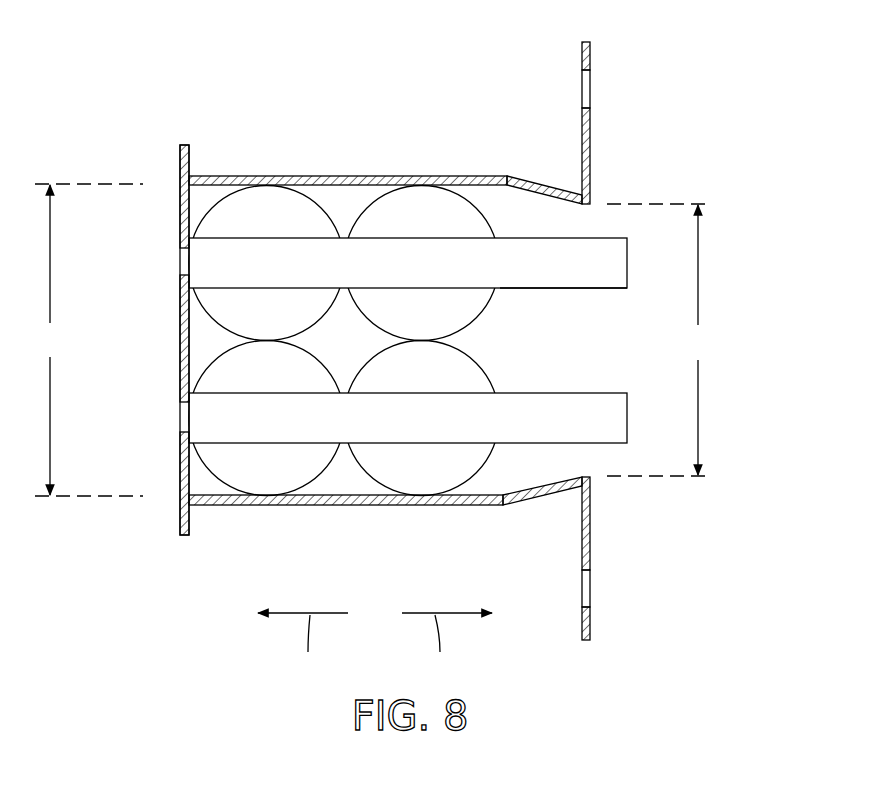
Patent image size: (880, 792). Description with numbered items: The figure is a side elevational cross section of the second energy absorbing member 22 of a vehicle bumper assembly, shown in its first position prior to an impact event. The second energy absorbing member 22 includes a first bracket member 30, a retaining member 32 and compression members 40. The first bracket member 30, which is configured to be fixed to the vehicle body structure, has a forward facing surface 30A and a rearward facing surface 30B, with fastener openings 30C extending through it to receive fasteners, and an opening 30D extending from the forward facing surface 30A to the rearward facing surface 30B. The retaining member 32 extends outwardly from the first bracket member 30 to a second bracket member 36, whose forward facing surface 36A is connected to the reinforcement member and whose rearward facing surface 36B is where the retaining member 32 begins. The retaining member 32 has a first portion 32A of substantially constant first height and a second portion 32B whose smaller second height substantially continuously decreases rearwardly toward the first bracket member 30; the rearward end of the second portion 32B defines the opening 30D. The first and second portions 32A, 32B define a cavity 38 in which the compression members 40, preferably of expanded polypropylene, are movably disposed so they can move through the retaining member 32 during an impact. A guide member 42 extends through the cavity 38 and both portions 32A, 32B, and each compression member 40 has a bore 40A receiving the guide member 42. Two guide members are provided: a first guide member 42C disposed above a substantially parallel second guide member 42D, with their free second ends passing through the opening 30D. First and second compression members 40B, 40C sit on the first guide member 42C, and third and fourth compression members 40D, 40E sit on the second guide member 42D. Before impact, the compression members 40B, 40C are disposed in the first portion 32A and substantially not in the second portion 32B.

The second energy absorbing member 22 is at (170, 601).
The first bracket member 30 is at (584, 322).
The forward facing surface 30A is at (582, 60).
The rearward facing surface 30B is at (590, 122).
The fastener openings 30C is at (585, 92).
The opening 30D is at (586, 203).
The retaining member 32 is at (385, 352).
The first portion 32A is at (189, 547).
The second portion 32B is at (503, 547).
The second bracket member 36 is at (189, 341).
The forward facing surface 36A is at (179, 513).
The rearward facing surface 36B is at (189, 160).
The cavity 38 is at (528, 467).
The compression member 40 is at (344, 212).
The bore 40A is at (208, 290).
The first compression member 40B is at (316, 198).
The second compression member 40C is at (471, 199).
The third compression member 40D is at (321, 476).
The fourth compression member 40E is at (488, 470).
The guide member 42 is at (530, 289).
The first guide member 42C is at (575, 289).
The second guide member 42D is at (548, 392).